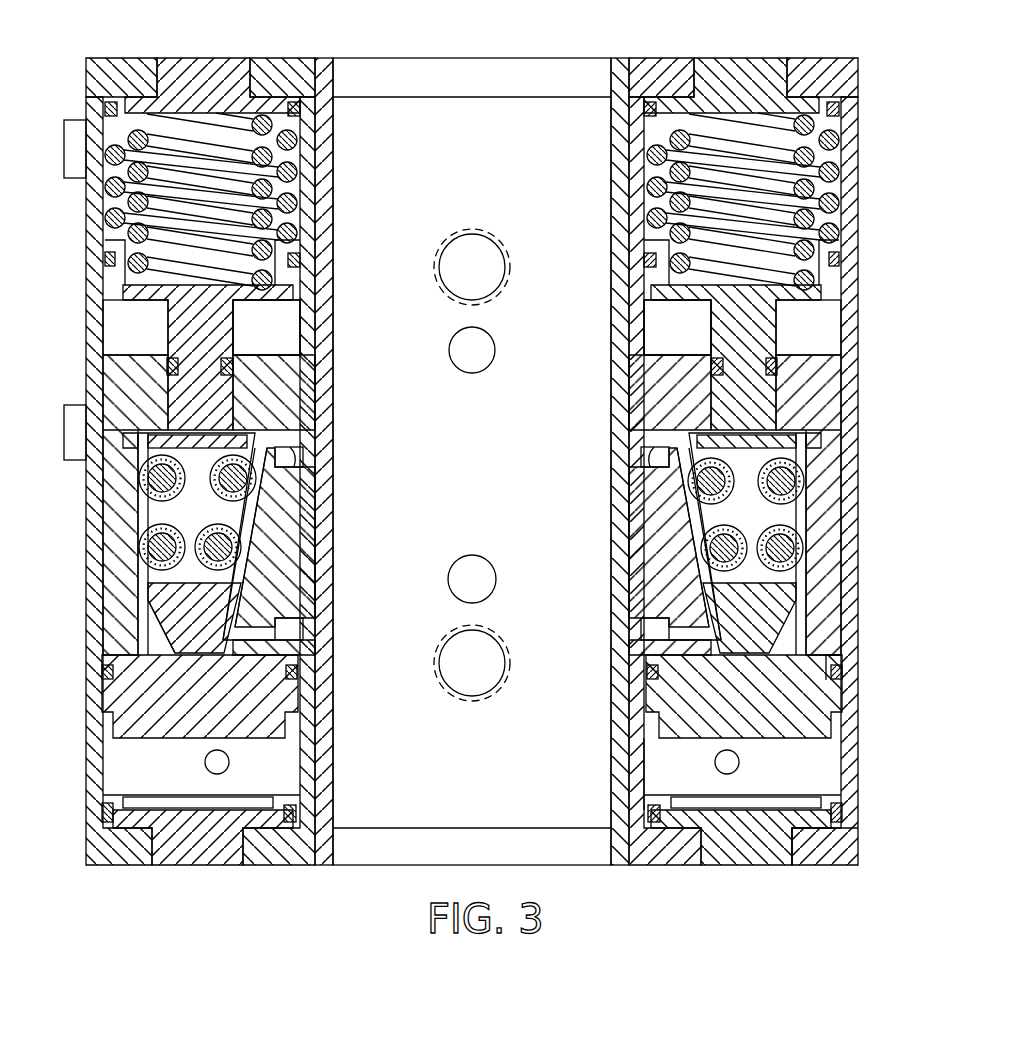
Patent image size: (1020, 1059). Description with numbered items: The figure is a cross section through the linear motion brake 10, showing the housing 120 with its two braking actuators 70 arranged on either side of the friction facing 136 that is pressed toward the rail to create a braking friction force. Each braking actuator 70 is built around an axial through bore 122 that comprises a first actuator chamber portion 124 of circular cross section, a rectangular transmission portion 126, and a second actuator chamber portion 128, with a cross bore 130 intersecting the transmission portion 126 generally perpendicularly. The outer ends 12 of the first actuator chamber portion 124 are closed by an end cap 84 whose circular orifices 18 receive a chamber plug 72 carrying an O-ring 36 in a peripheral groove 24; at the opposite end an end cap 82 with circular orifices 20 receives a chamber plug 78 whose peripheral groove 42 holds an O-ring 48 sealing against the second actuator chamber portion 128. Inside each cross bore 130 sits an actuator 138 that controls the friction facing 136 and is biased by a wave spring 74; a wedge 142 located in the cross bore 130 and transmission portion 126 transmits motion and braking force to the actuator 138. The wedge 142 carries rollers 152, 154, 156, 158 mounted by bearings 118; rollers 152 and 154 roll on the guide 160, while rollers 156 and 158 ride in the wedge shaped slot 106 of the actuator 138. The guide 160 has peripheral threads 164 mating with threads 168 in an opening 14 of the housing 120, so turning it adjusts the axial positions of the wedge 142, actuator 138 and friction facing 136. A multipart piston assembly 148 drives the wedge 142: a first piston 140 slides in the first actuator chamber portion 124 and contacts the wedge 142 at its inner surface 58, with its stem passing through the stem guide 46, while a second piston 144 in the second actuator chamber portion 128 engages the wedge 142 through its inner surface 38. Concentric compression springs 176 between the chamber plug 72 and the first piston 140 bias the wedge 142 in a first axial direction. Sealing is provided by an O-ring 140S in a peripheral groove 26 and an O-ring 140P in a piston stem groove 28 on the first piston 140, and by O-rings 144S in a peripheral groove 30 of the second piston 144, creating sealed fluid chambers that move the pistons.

The brake 10 is at (83, 885).
The outer ends 12 is at (270, 95).
The opening 14 is at (852, 468).
The first and second circular orifices 18 is at (150, 66).
The first and second circular orifices 20 is at (700, 857).
The peripheral groove 24 is at (835, 110).
The peripheral groove 26 is at (300, 258).
The piston stem groove 28 is at (770, 367).
The peripheral groove 30 is at (840, 680).
The O-ring 36 is at (845, 115).
The inner surface 38 is at (110, 655).
The peripheral groove 42 is at (105, 812).
The stem guide 46 is at (230, 385).
The O-ring 48 is at (835, 820).
The inner surface 58 is at (720, 462).
The braking actuator 70 is at (222, 56).
The chamber plug 72 is at (760, 95).
The wave spring 74 is at (305, 633).
The chamber plug 78 is at (193, 850).
The end cap 82 is at (822, 857).
The end cap 84 is at (672, 68).
The wedge shaped slot 106 is at (262, 535).
The bearings 118 is at (800, 548).
The housing 120 is at (117, 412).
The axial through bore 122 is at (110, 118).
The first actuator chamber portion 124 is at (660, 175).
The transmission portion 126 is at (165, 610).
The second actuator chamber portion 128 is at (680, 770).
The cross bore 130 is at (150, 438).
The friction facing 136 is at (330, 97).
The actuator 138 is at (650, 600).
The first piston 140 is at (740, 330).
The O-ring 140P is at (175, 370).
The O-ring 140S is at (652, 265).
The wedge 142 is at (232, 505).
The second piston 144 is at (690, 706).
The O-rings 144S is at (650, 670).
The multipart piston assembly 148 is at (287, 312).
The roller 152 is at (730, 505).
The roller 154 is at (735, 527).
The roller 156 is at (220, 508).
The roller 158 is at (205, 560).
The guide 160 is at (95, 563).
The peripheral threads 164 is at (845, 658).
The mating threads 168 is at (835, 442).
The concentric compression springs 176 is at (115, 215).